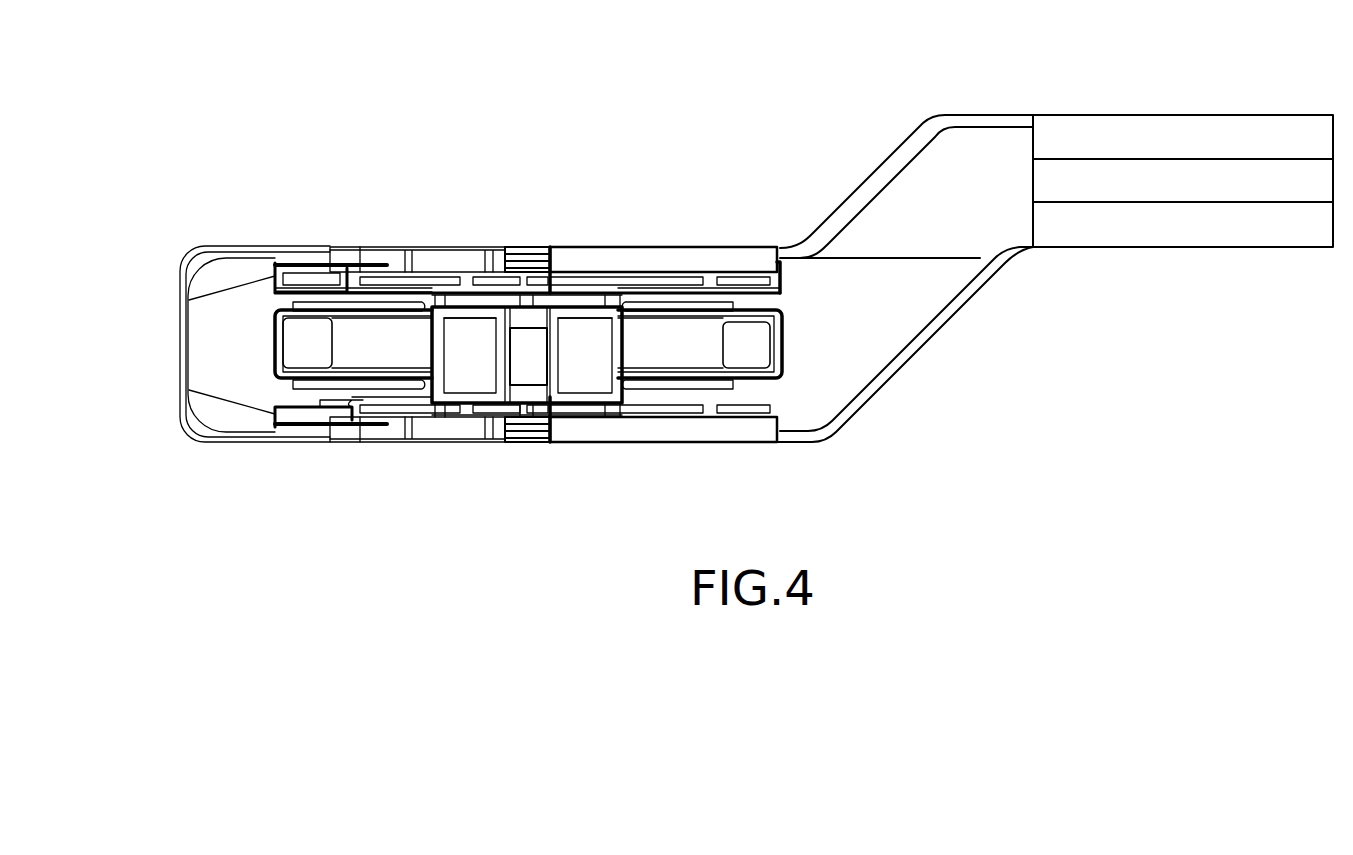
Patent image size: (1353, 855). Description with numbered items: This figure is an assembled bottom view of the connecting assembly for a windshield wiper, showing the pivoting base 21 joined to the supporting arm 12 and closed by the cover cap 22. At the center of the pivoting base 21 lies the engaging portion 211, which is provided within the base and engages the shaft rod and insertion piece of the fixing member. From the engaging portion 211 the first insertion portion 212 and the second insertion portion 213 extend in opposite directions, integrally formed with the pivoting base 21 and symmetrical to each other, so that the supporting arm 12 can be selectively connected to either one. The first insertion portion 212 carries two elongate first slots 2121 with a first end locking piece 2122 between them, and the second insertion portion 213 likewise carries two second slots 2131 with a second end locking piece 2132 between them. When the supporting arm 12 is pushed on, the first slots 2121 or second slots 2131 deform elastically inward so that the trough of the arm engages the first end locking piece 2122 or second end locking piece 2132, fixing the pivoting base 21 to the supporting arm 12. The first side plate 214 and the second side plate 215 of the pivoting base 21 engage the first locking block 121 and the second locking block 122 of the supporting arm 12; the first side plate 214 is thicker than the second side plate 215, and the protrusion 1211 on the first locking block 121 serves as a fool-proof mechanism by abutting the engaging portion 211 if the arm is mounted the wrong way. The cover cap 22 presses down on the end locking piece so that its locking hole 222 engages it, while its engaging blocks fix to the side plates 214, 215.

The supporting arm 12 is at (1177, 115).
The pivoting base 21 is at (785, 345).
The cover cap 22 is at (172, 336).
The first locking block 121 is at (640, 255).
The second locking block 122 is at (655, 428).
The protrusion 1211 is at (560, 282).
The engaging portion 211 is at (533, 393).
The first insertion portion 212 is at (807, 167).
The first slots 2121 is at (688, 385).
The first end locking piece 2122 is at (748, 340).
The second insertion portion 213 is at (357, 158).
The second slots 2131 is at (375, 378).
The second end locking piece 2132 is at (307, 335).
The first side plate 214 is at (273, 278).
The second side plate 215 is at (273, 420).
The locking hole 222 is at (452, 260).